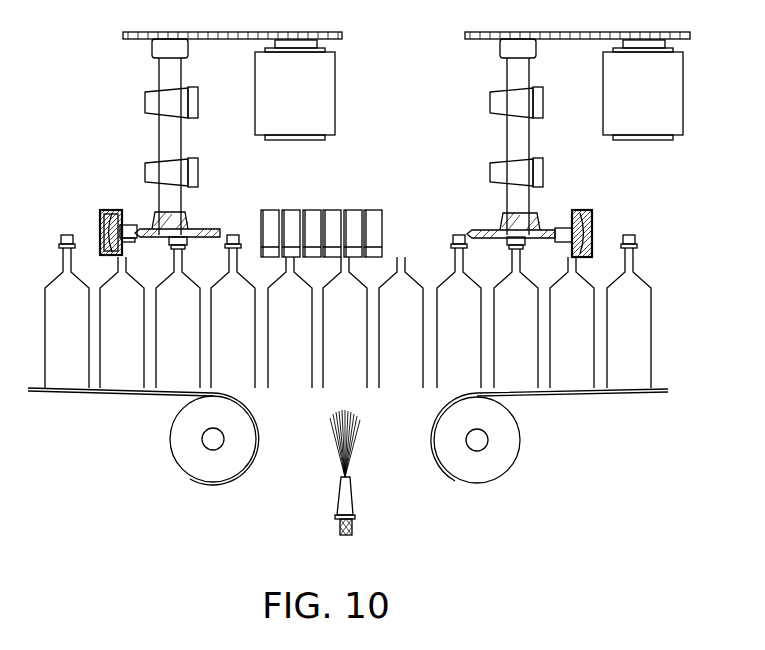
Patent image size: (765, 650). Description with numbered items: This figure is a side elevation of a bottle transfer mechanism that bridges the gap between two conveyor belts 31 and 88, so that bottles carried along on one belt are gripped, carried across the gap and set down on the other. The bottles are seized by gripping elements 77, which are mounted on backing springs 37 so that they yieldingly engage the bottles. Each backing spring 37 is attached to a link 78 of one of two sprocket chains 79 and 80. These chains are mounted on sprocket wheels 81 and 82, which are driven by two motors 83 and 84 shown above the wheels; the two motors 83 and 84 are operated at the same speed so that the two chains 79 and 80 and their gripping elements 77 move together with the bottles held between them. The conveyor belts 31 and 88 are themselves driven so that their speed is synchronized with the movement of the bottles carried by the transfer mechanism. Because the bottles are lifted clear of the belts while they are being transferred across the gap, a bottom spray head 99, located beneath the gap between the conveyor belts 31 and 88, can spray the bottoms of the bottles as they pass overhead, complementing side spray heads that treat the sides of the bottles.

The conveyor belt 31 is at (100, 393).
The backing spring 37 is at (104, 211).
The gripping element 77 is at (100, 224).
The link 78 is at (121, 226).
The sprocket chain 79 is at (128, 240).
The sprocket chain 80 is at (558, 229).
The sprocket wheel 81 is at (192, 232).
The sprocket wheel 82 is at (495, 226).
The motor 83 is at (336, 78).
The motor 84 is at (688, 84).
The conveyor belt 88 is at (578, 395).
The bottom spray head 99 is at (355, 507).